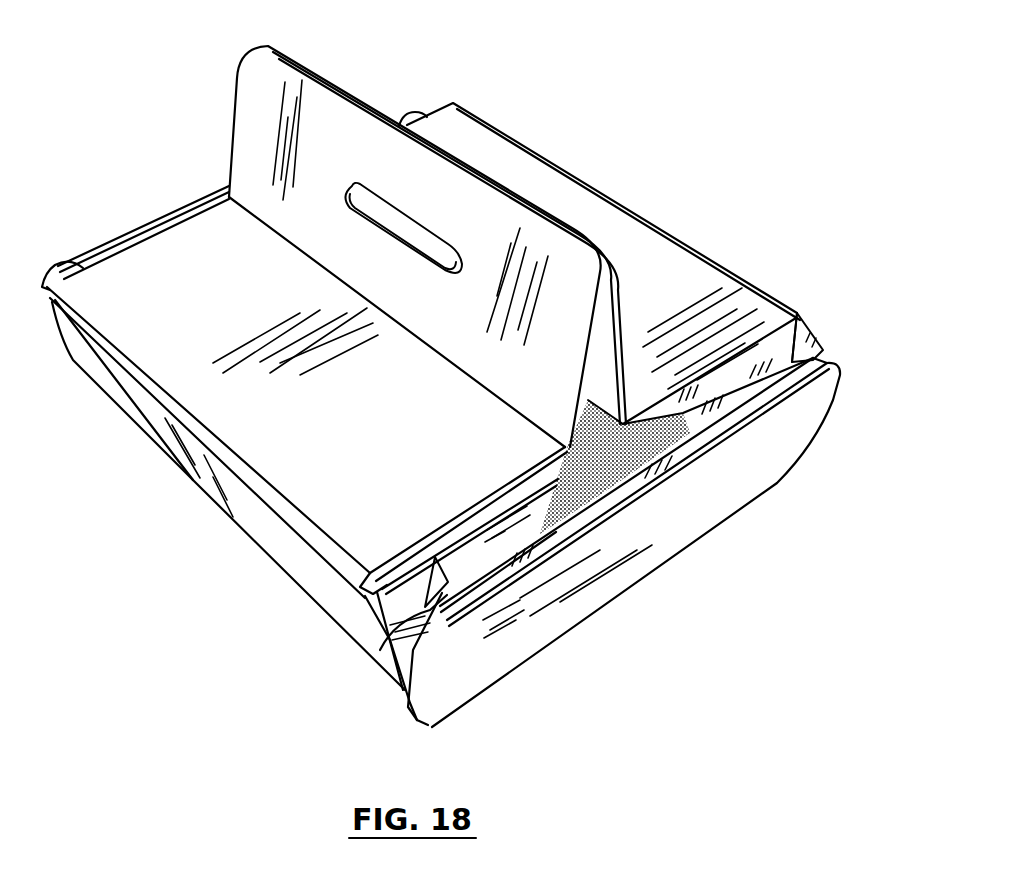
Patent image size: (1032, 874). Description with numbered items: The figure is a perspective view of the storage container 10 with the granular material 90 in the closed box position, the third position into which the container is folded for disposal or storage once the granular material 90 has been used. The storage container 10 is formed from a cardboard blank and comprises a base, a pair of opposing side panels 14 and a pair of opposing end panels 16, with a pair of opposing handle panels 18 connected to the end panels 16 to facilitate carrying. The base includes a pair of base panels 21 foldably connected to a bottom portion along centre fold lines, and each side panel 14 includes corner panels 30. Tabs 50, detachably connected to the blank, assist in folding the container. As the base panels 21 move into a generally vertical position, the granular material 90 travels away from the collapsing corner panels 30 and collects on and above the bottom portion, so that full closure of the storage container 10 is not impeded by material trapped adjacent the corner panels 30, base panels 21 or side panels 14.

The storage container 10 is at (648, 112).
The side panels 14 is at (122, 228).
The end panels 16 is at (137, 338).
The handle panels 18 is at (253, 88).
The base panels 21 is at (272, 536).
The corner panels 30 is at (779, 351).
The tabs 50 is at (388, 650).
The granular material 90 is at (605, 476).